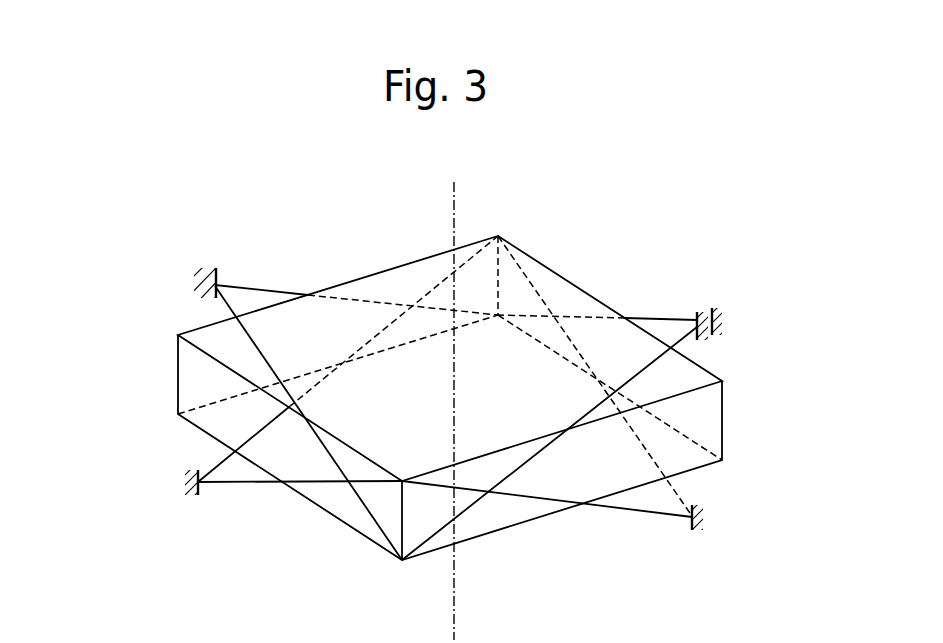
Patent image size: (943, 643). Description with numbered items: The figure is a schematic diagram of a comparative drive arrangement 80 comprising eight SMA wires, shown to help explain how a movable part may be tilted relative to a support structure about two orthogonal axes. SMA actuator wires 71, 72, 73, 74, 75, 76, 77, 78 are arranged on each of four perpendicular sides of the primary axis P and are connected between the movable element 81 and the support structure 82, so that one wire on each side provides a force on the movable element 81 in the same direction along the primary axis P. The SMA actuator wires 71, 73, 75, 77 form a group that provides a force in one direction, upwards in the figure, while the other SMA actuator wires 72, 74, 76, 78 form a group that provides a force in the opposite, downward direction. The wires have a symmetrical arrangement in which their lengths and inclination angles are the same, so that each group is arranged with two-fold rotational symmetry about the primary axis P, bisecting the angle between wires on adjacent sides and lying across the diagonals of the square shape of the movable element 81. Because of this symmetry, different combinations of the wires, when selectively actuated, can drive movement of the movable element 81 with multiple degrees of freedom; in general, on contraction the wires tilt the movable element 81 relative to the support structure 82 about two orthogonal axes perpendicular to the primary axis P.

The SMA actuator wire 71 is at (373, 525).
The SMA actuator wire 72 is at (237, 483).
The SMA actuator wire 73 is at (655, 318).
The SMA actuator wire 74 is at (522, 270).
The SMA actuator wire 75 is at (462, 512).
The SMA actuator wire 76 is at (617, 513).
The SMA actuator wire 77 is at (275, 282).
The SMA actuator wire 78 is at (438, 287).
The drive arrangement 80 is at (128, 365).
The movable element 81 is at (700, 418).
The support structure 82 is at (194, 282).
The primary axis P is at (455, 388).